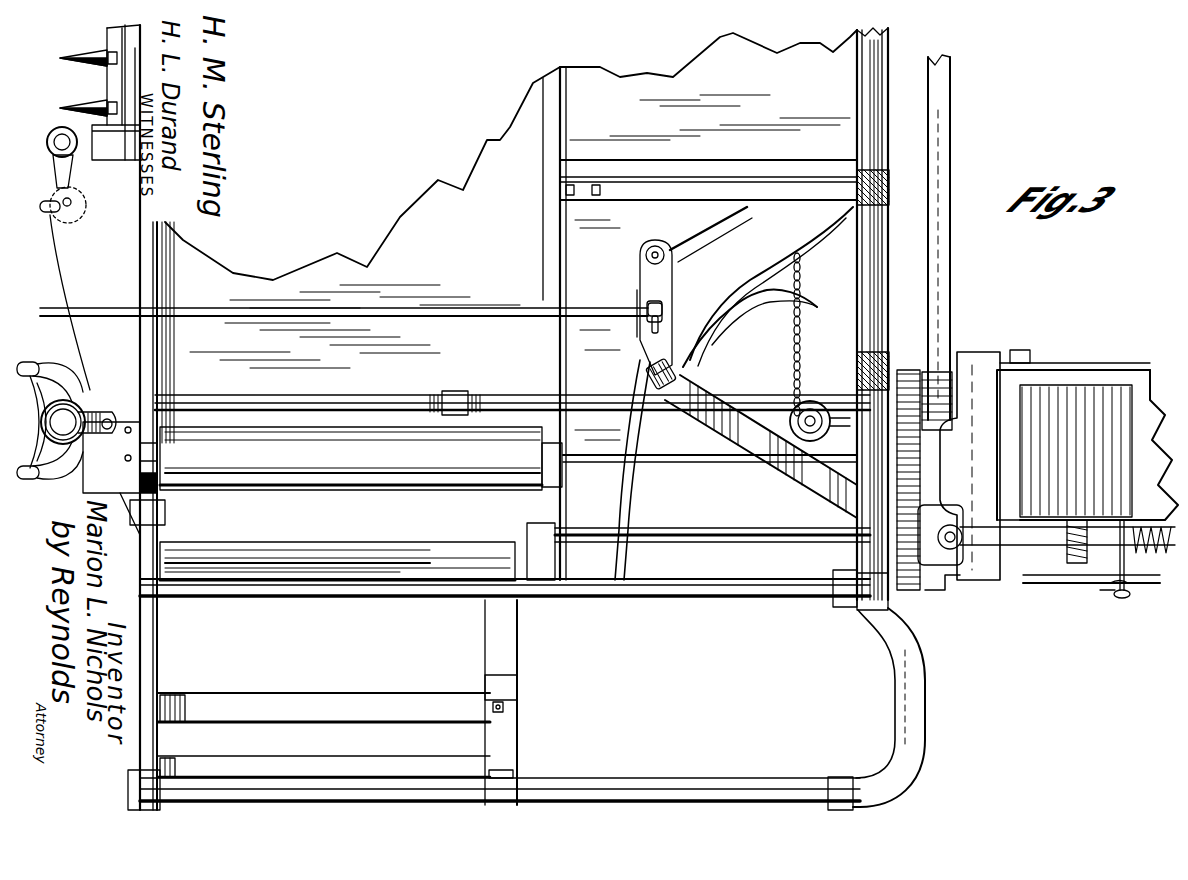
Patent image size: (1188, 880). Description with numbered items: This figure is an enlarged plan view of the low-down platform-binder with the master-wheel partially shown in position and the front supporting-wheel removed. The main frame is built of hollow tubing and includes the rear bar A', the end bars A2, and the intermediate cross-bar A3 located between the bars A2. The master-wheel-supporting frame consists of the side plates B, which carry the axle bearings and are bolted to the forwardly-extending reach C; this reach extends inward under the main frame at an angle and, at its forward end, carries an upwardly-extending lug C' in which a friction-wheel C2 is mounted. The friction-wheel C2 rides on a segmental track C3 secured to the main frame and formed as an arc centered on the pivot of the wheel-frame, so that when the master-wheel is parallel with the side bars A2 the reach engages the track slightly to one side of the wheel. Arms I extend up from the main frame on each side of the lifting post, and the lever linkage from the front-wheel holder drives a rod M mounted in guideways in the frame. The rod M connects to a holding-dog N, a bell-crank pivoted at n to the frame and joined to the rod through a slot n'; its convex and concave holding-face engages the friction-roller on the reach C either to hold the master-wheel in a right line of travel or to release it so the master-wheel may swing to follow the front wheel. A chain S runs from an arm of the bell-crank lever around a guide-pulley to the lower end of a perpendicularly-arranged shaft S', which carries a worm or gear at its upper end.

The rear bar A' is at (886, 314).
The end bar A2 is at (505, 586).
The intermediate cross-bar A3 is at (505, 604).
The side plate B is at (1030, 612).
The reach C is at (761, 446).
The upwardly-extending lug C' is at (970, 466).
The friction-wheel C2 is at (749, 298).
The segmental track C3 is at (638, 470).
The arm I is at (77, 448).
The rod M is at (430, 304).
The holding-dog N is at (648, 290).
The pivot n is at (634, 258).
The slot n' is at (622, 327).
The chain S is at (803, 334).
The perpendicularly-arranged shaft S' is at (820, 387).